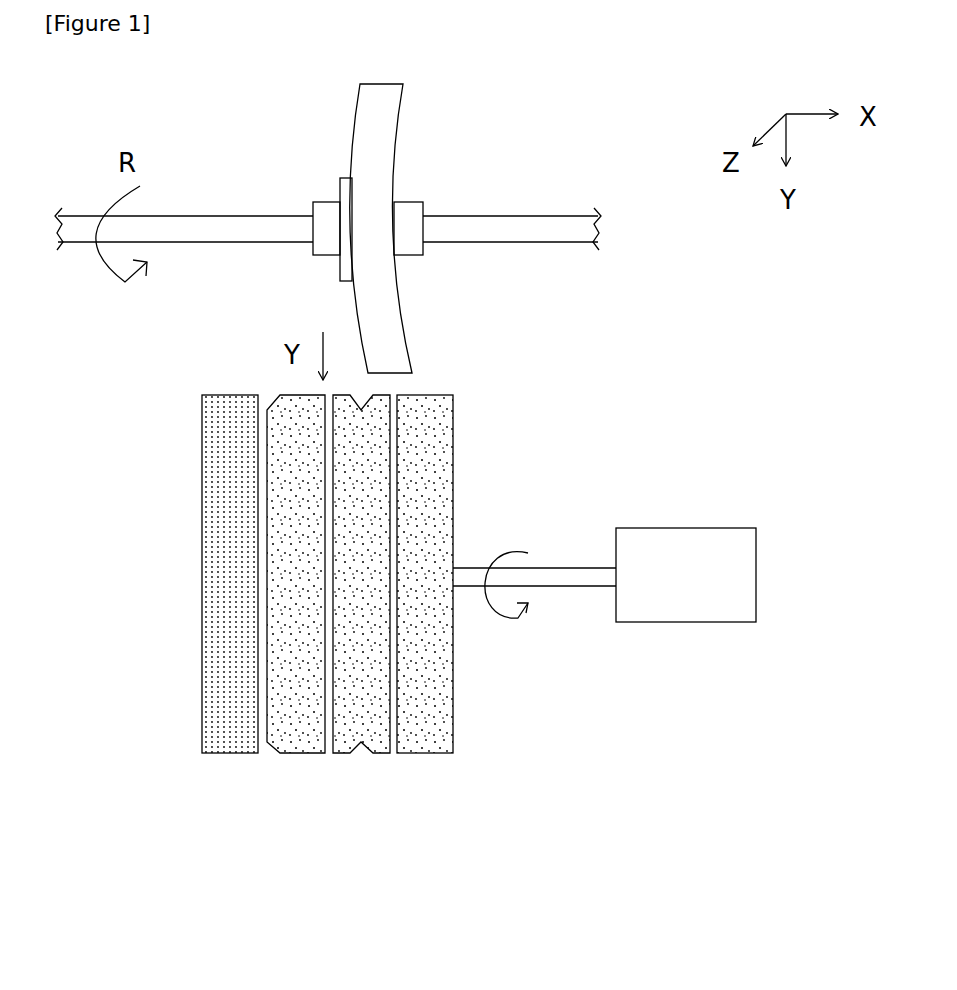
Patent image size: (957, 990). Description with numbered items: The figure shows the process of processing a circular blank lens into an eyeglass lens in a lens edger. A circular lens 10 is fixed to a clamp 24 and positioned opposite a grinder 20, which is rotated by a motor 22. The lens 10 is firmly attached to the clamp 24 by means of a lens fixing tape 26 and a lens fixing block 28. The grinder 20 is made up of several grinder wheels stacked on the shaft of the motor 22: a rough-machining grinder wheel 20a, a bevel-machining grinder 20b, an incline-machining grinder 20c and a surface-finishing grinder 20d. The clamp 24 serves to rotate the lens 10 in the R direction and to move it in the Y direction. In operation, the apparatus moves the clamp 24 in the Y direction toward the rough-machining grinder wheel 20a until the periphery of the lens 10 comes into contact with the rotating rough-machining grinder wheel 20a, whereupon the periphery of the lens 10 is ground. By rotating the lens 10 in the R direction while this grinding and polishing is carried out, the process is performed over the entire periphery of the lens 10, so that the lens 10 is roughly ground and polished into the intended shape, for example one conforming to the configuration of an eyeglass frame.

The circular lens 10 is at (390, 132).
The clamp 24 is at (204, 220).
The lens fixing tape 26 is at (340, 188).
The lens fixing block 28 is at (330, 256).
The grinder 20 is at (332, 647).
The rough-machining grinder wheel 20a is at (429, 607).
The bevel-machining grinder 20b is at (363, 756).
The incline-machining grinder 20c is at (299, 756).
The surface-finishing grinder 20d is at (229, 756).
The motor 22 is at (695, 613).